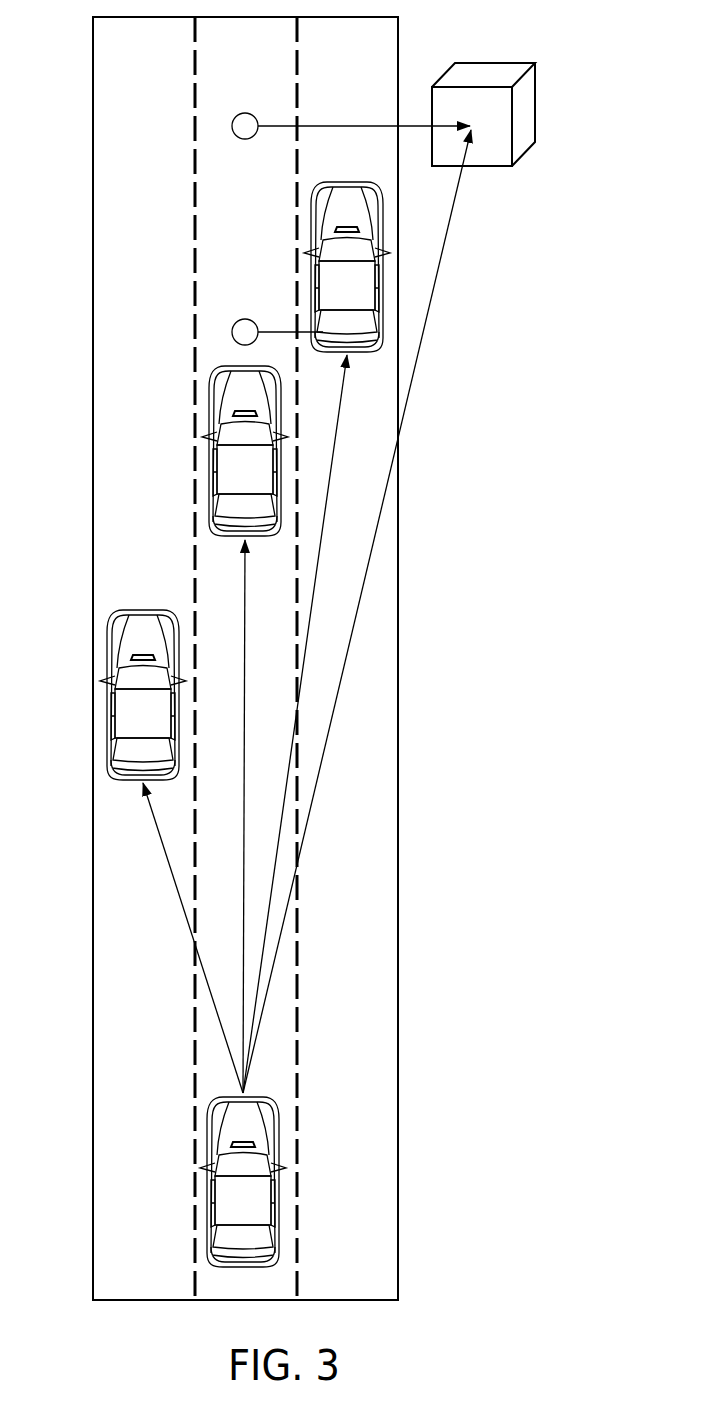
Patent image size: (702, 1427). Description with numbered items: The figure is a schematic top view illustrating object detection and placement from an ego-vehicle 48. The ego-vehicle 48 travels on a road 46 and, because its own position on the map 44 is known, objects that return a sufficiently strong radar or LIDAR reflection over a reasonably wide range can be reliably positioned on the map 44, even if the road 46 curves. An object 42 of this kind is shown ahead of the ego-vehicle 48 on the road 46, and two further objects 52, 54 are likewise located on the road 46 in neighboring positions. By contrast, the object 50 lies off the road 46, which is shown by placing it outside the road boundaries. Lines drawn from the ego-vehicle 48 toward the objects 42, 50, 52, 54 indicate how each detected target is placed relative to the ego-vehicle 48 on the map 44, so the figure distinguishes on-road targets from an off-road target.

The object 42 is at (210, 452).
The map 44 is at (504, 486).
The road 46 is at (397, 789).
The ego-vehicle 48 is at (278, 1183).
The object 50 is at (535, 113).
The object 52 is at (108, 710).
The object 54 is at (313, 265).